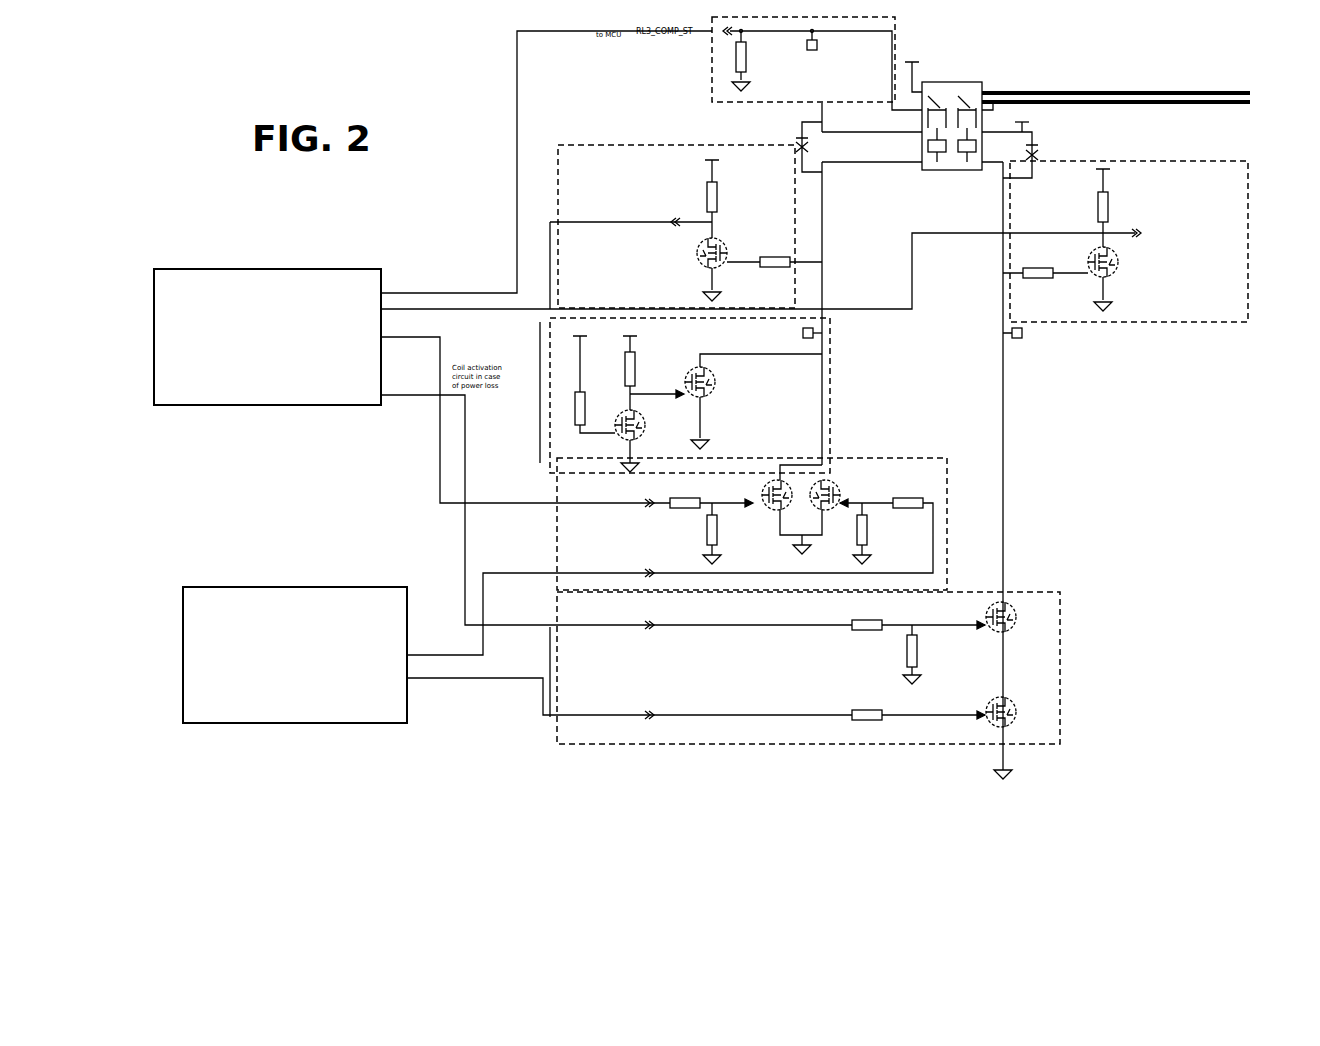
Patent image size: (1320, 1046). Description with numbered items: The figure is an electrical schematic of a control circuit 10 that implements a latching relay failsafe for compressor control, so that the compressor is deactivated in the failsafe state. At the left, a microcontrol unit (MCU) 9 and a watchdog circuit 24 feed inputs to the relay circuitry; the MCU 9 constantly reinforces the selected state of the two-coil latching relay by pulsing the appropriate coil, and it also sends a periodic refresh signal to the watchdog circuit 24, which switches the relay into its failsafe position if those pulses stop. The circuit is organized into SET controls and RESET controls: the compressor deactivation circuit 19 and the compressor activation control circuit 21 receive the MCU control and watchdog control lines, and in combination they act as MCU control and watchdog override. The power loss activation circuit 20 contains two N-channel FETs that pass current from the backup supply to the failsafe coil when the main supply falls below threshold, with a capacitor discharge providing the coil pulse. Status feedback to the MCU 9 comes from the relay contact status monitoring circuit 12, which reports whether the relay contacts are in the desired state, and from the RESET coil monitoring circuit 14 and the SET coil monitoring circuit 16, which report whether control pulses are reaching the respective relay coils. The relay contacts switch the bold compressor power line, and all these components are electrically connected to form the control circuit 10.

The microcontrol unit (MCU) 9 is at (200, 258).
The control circuit 10 is at (1103, 463).
The relay contact status monitoring circuit 12 is at (703, 62).
The RESET coil monitoring circuit 14 is at (1178, 152).
The SET coil monitoring circuit 16 is at (548, 165).
The compressor deactivation circuit 19 is at (904, 448).
The power loss activation circuit 20 is at (841, 353).
The compressor activation control circuit 21 is at (1070, 617).
The watchdog circuit 24 is at (212, 575).